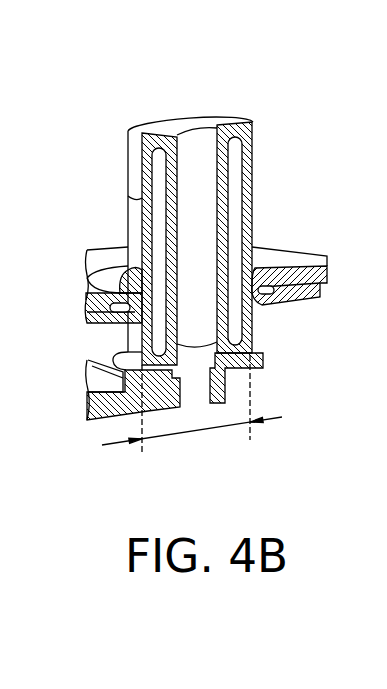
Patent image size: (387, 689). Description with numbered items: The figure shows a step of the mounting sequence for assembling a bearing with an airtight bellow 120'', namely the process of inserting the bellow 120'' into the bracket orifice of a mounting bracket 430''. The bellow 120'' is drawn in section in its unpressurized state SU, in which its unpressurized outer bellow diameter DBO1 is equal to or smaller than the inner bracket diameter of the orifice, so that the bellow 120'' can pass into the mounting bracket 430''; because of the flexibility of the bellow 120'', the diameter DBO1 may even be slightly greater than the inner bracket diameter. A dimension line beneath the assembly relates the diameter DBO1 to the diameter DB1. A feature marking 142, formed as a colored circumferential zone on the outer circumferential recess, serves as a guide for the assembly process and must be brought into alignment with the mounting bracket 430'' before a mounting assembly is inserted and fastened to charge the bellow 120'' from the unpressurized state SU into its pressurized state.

The bellow 120'' is at (206, 204).
The unpressurized state SU is at (206, 204).
The feature marking 142 is at (123, 225).
The mounting bracket 430'' is at (301, 224).
The unpressurized outer bellow diameter DBO1 is at (232, 378).
The bearing diameter DB1 is at (252, 385).